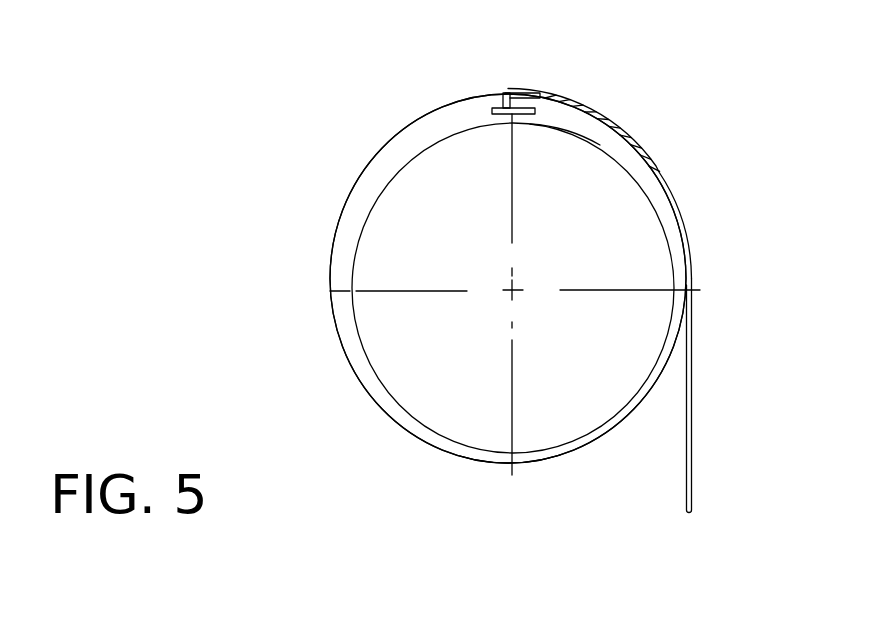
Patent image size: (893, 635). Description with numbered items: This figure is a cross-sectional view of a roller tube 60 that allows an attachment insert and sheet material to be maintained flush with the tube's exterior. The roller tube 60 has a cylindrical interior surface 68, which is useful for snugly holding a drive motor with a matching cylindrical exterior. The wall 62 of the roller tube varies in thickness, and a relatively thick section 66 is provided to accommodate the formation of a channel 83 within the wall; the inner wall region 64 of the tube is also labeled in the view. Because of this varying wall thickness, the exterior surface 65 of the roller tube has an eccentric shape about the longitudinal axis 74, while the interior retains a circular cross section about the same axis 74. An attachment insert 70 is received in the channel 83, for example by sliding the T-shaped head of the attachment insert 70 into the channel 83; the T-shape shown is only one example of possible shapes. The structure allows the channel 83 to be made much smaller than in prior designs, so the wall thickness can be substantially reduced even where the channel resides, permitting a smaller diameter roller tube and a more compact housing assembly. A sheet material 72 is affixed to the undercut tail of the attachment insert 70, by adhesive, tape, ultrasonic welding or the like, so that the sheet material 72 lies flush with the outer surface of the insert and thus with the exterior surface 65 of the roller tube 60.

The roller tube 60 is at (303, 145).
The wall 62 is at (556, 455).
The inner wall 64 is at (567, 135).
The exterior surface 65 is at (330, 262).
The relatively thick section 66 is at (496, 100).
The cylindrical interior surface 68 is at (383, 380).
The attachment insert 70 is at (520, 93).
The sheet material 72 is at (693, 437).
The longitudinal axis 74 is at (515, 290).
The channel 83 is at (507, 93).